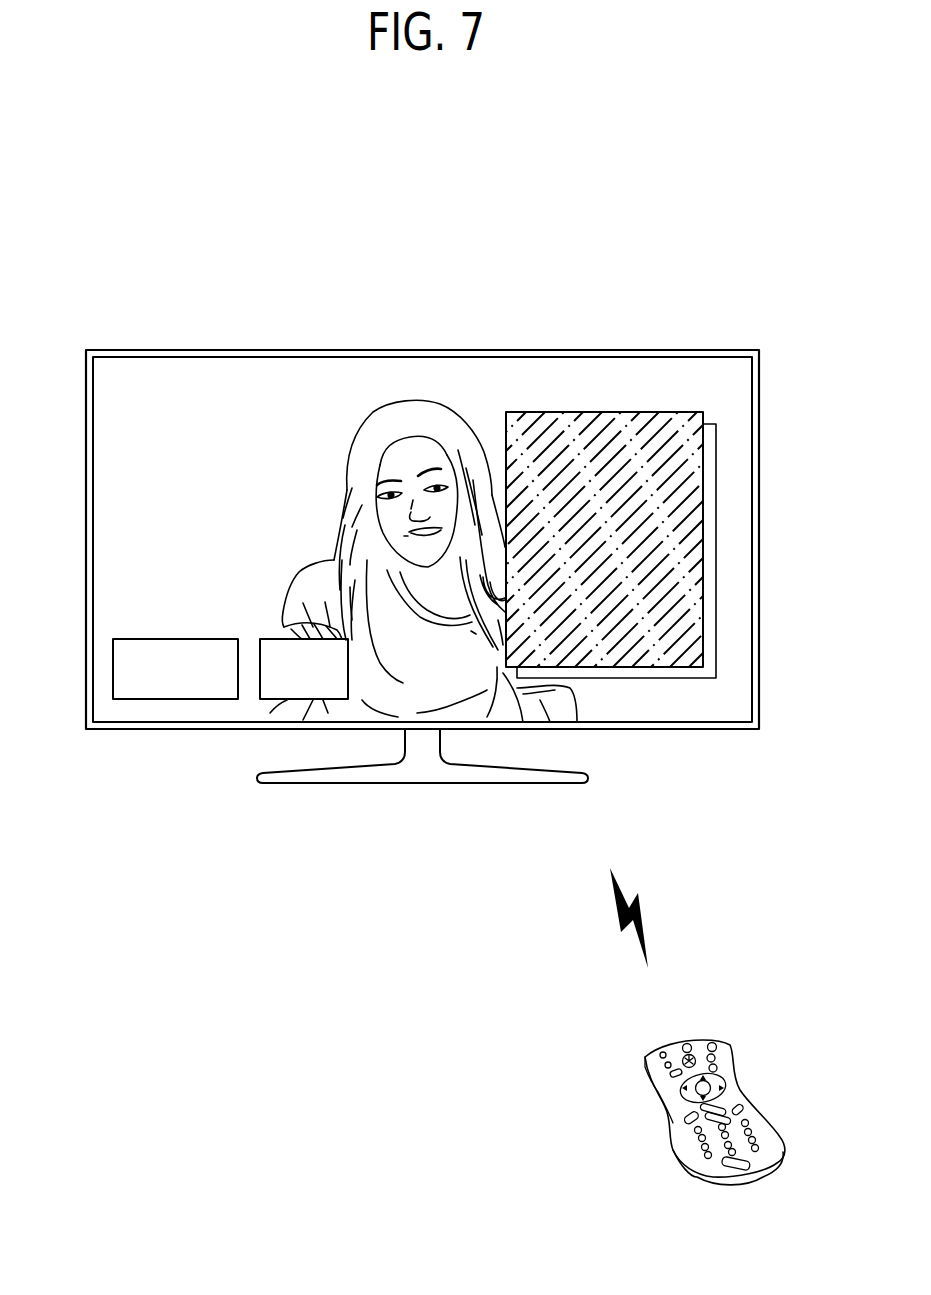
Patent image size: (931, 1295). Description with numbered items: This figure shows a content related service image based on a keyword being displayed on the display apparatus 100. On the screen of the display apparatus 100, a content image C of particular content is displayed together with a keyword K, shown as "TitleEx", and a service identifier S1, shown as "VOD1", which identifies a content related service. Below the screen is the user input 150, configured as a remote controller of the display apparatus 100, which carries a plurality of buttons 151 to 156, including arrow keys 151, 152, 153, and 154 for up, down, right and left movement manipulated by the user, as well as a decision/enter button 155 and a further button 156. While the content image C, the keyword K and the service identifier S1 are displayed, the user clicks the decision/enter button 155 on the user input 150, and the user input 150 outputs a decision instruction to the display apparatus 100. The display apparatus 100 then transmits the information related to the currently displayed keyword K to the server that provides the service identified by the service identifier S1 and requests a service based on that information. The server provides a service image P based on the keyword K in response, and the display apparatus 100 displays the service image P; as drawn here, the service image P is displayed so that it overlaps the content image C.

The display apparatus 100 is at (564, 322).
The content image C is at (290, 534).
The content related service image P is at (690, 538).
The keyword K is at (138, 699).
The service identifier S1 is at (290, 699).
The user input 150 is at (702, 1057).
The arrow key 151 is at (702, 1097).
The arrow key 152 is at (717, 1088).
The arrow key 153 is at (690, 1088).
The arrow key 154 is at (690, 1116).
The decision/enter button 155 is at (713, 1080).
The button 156 is at (672, 1070).